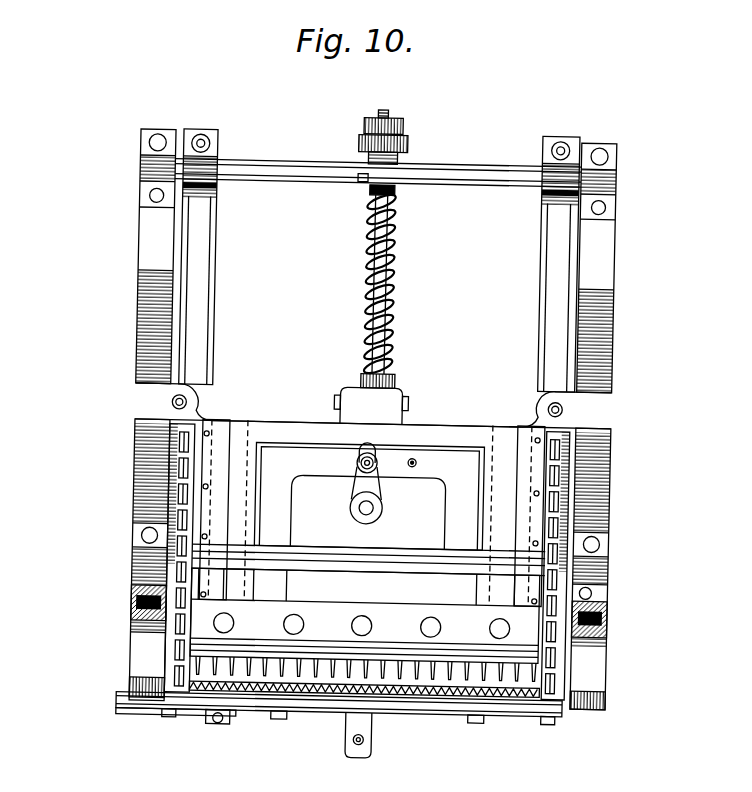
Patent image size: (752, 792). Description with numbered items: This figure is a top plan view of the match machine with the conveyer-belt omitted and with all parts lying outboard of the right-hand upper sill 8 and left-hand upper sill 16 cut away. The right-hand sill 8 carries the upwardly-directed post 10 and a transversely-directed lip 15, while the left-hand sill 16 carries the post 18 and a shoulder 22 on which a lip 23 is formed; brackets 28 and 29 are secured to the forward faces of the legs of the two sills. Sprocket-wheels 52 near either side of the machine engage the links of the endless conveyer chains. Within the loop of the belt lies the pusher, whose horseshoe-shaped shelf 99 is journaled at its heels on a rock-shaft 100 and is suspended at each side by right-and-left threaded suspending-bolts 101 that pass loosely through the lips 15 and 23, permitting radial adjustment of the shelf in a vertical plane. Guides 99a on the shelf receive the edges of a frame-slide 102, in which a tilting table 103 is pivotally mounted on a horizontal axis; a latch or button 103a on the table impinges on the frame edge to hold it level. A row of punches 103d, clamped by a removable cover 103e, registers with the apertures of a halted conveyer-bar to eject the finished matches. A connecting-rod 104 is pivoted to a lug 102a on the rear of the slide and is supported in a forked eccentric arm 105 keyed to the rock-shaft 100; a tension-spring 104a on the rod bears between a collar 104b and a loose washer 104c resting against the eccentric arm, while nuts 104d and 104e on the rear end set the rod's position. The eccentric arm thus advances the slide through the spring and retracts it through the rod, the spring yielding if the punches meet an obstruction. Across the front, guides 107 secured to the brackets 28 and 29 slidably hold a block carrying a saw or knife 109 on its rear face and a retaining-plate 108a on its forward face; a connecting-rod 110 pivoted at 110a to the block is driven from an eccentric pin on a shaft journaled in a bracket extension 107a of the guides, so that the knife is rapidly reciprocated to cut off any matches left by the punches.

The upper sill 8 is at (600, 254).
The upwardly-directed post 10 is at (606, 600).
The transversely-directed lip 15 is at (570, 395).
The upper sill 16 is at (135, 268).
The post 18 is at (140, 612).
The shoulder 22 is at (138, 368).
The transversely-directed lip 23 is at (168, 394).
The bracket 28 is at (588, 684).
The bracket 29 is at (150, 684).
The sprocket-wheels 52 is at (180, 470).
The shelf 99 is at (210, 303).
The guides 99a is at (222, 444).
The rock-shaft 100 is at (410, 176).
The suspending-bolts 101 is at (196, 398).
The frame-slide 102 is at (378, 426).
The lug 102a is at (385, 392).
The tilting table 103 is at (385, 510).
The latch or button 103a is at (360, 468).
The punches 103d is at (440, 668).
The cover 103e is at (402, 604).
The connecting-rod 104 is at (388, 256).
The tension-spring 104a is at (392, 304).
The collar 104b is at (358, 382).
The loose washer 104c is at (392, 192).
The nut 104d is at (402, 144).
The nut 104e is at (398, 126).
The forked eccentric arm 105 is at (358, 176).
The guides 107 is at (322, 706).
The bracket extension 107a is at (126, 718).
The retaining-plate 108a is at (494, 728).
The saw or knife 109 is at (396, 694).
The connecting-rod 110 is at (182, 720).
The pivot 110a is at (230, 728).